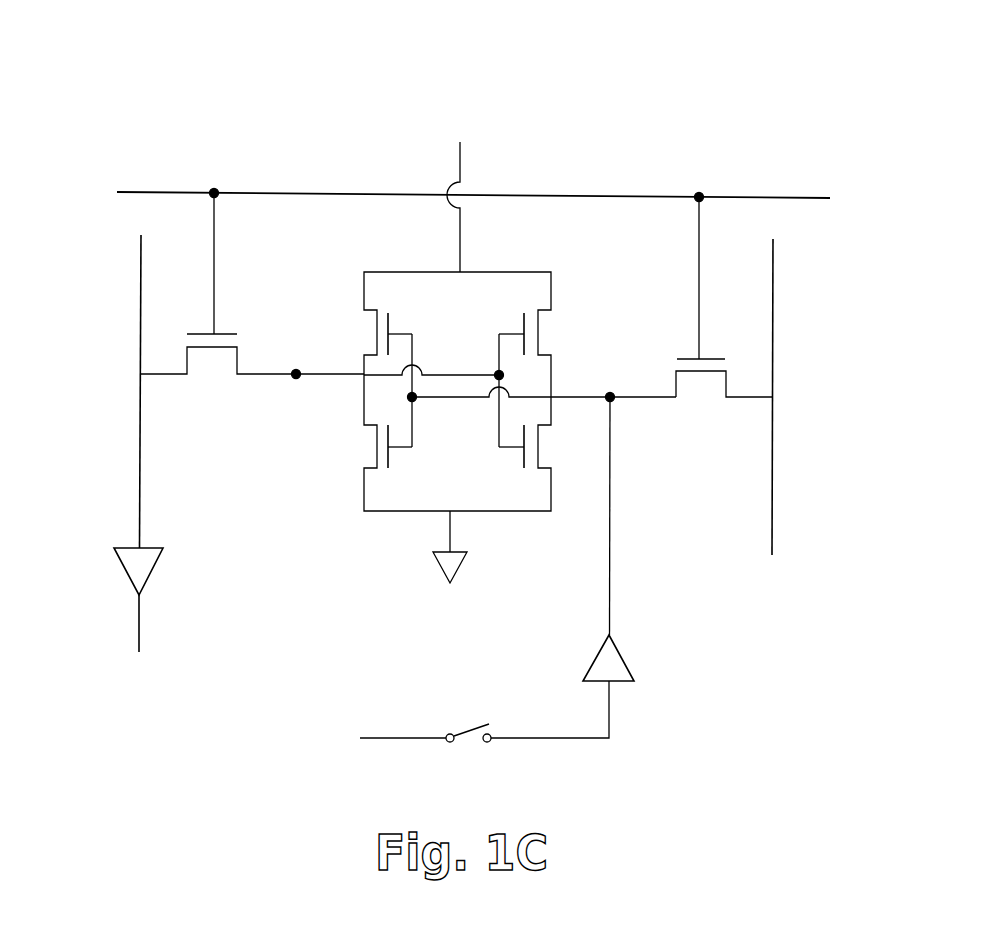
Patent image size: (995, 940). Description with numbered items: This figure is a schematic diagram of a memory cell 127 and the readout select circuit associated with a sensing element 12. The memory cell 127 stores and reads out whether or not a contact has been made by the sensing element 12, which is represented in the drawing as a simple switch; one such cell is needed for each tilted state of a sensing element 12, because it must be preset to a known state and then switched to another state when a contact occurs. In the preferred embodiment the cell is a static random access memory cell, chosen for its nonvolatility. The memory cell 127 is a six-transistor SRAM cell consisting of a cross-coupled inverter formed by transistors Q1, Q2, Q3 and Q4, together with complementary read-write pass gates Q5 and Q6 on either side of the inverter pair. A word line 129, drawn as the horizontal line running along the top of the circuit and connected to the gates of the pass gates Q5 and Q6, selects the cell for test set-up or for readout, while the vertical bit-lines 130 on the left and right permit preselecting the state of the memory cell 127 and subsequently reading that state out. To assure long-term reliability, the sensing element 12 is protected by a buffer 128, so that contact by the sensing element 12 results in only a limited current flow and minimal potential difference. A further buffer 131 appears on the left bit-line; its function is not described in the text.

The memory cell 127 is at (786, 145).
The buffer 128 is at (619, 653).
The word line 129 is at (140, 192).
The bit-lines 130 is at (139, 482).
The inverting buffer 131 is at (128, 577).
The sensing element 12 is at (471, 729).
The cross-coupled inverter transistor Q1 is at (404, 324).
The cross-coupled inverter transistor Q2 is at (503, 324).
The cross-coupled inverter transistor Q3 is at (405, 456).
The cross-coupled inverter transistor Q4 is at (503, 456).
The read-write pass gate Q5 is at (724, 315).
The read-write pass gate Q6 is at (252, 304).